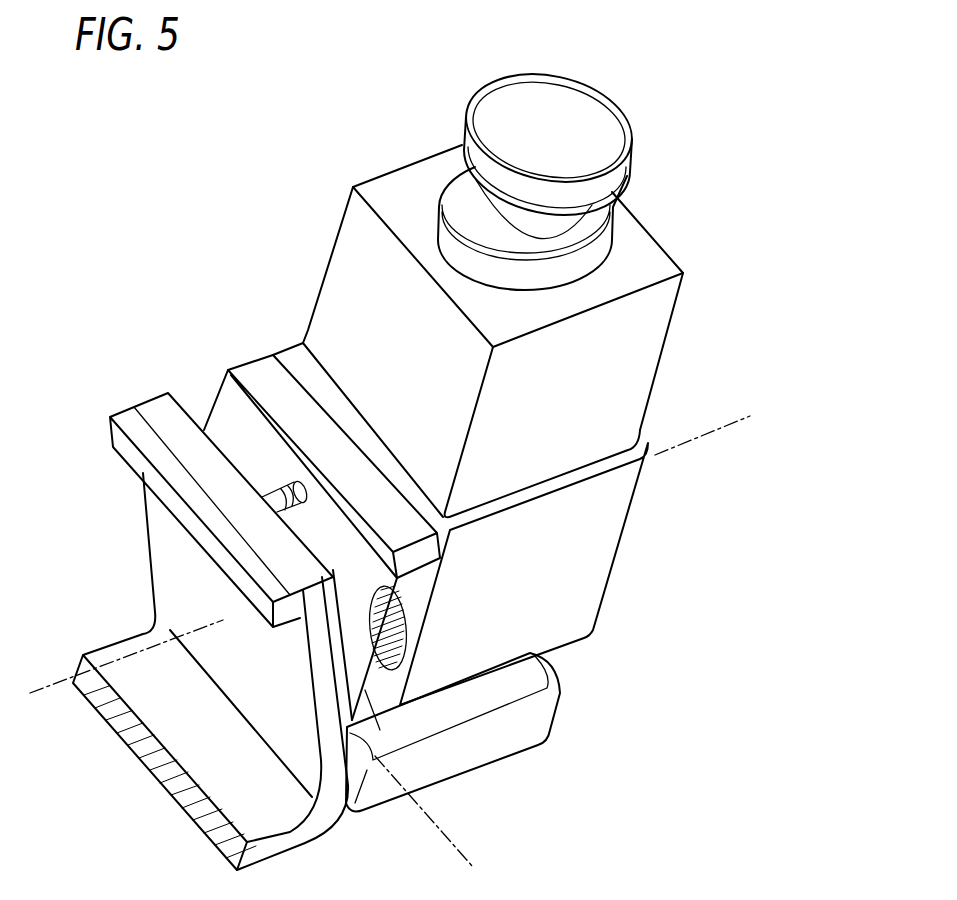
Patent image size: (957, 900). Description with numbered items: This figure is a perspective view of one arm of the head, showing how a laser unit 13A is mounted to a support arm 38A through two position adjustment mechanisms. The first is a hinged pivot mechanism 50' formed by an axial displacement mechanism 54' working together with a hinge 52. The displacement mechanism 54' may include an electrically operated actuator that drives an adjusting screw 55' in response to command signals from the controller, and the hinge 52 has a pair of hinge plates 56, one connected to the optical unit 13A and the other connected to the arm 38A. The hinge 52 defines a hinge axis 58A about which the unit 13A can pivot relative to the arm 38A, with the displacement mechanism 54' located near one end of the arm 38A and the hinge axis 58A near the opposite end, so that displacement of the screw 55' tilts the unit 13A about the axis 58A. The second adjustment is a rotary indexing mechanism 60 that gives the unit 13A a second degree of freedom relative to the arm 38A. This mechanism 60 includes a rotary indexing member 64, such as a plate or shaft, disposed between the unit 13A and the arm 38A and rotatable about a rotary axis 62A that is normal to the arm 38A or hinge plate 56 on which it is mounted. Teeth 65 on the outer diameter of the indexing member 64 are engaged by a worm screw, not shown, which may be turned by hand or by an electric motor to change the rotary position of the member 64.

The laser unit 13A is at (414, 162).
The support arm 38A is at (150, 548).
The pivot mechanism 50' is at (264, 658).
The hinge 52 is at (343, 734).
The axial displacement mechanism 54' is at (187, 495).
The adjusting screw 55' is at (276, 472).
The hinge plate 56 is at (234, 367).
The hinge axis 58A is at (441, 833).
The rotary indexing mechanism 60 is at (252, 357).
The rotary axis 62A is at (707, 440).
The rotary indexing member 64 is at (406, 608).
The teeth 65 is at (395, 642).